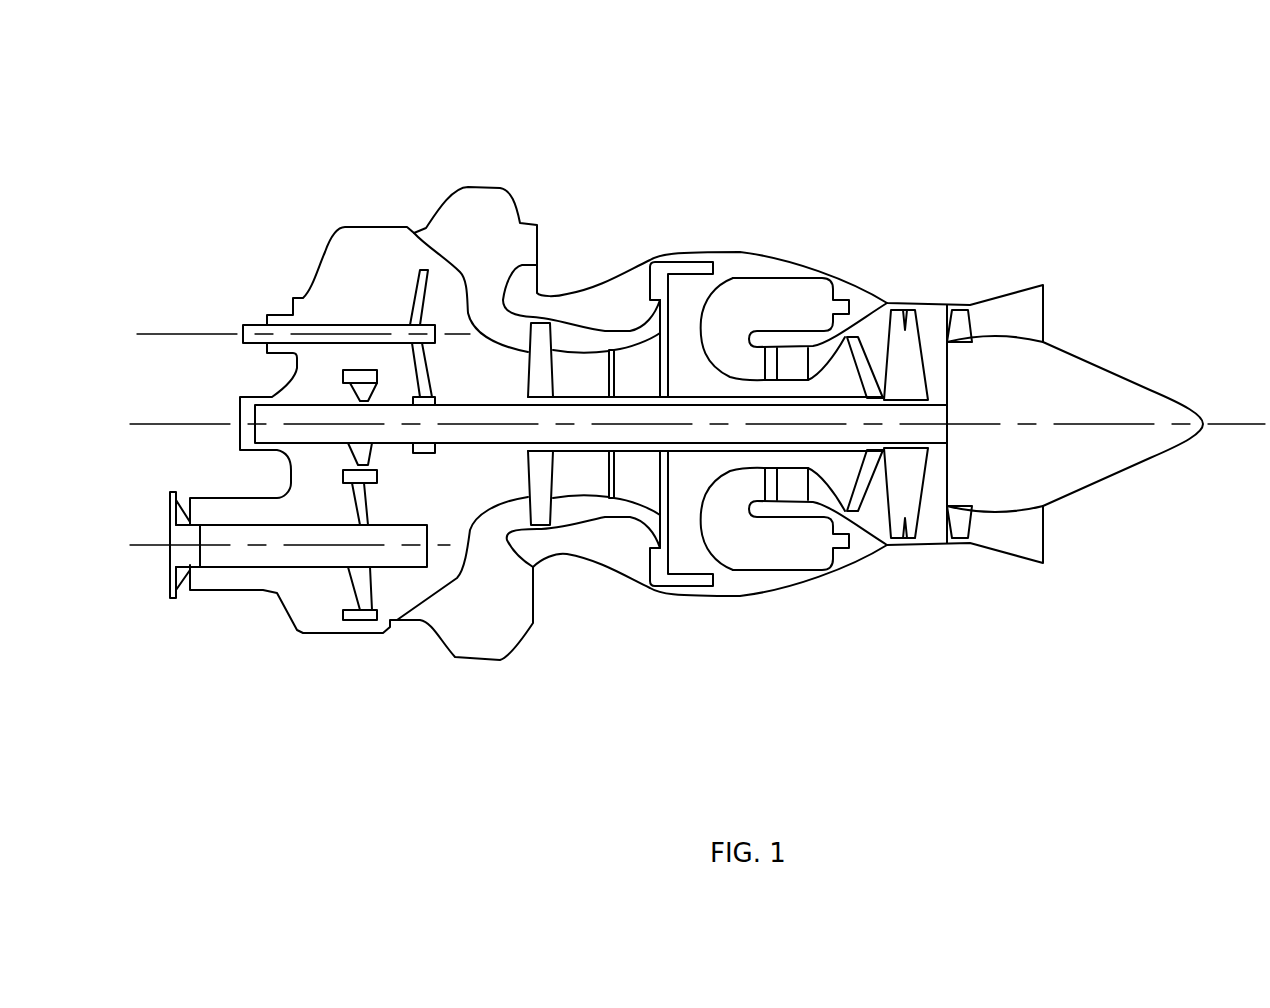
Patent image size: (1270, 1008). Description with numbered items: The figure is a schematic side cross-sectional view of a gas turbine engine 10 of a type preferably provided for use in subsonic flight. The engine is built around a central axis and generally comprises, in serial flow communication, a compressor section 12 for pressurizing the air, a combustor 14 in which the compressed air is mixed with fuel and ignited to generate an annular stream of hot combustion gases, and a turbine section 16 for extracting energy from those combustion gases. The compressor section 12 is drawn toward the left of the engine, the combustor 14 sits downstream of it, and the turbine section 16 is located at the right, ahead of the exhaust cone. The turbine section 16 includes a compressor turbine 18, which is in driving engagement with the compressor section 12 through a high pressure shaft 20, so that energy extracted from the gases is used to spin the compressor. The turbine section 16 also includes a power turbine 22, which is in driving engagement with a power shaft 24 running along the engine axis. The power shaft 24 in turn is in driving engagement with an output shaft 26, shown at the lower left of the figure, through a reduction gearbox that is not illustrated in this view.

The gas turbine engine 10 is at (1030, 188).
The compressor section 12 is at (633, 360).
The combustor 14 is at (772, 307).
The turbine section 16 is at (868, 503).
The compressor turbine 18 is at (835, 508).
The high pressure shaft 20 is at (703, 397).
The power turbine 22 is at (887, 303).
The power shaft 24 is at (472, 445).
The output shaft 26 is at (228, 553).